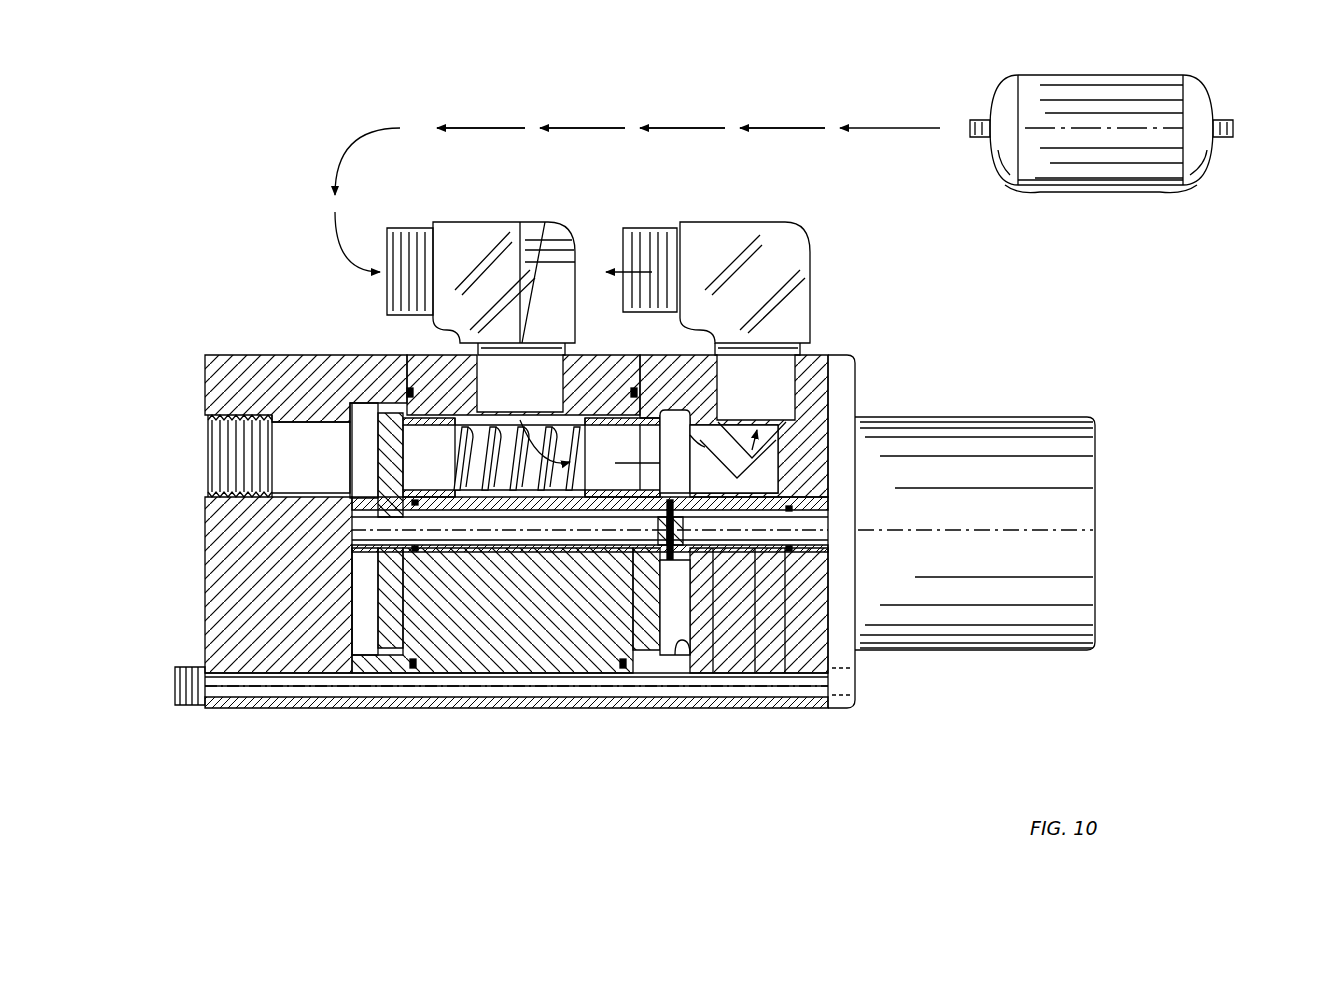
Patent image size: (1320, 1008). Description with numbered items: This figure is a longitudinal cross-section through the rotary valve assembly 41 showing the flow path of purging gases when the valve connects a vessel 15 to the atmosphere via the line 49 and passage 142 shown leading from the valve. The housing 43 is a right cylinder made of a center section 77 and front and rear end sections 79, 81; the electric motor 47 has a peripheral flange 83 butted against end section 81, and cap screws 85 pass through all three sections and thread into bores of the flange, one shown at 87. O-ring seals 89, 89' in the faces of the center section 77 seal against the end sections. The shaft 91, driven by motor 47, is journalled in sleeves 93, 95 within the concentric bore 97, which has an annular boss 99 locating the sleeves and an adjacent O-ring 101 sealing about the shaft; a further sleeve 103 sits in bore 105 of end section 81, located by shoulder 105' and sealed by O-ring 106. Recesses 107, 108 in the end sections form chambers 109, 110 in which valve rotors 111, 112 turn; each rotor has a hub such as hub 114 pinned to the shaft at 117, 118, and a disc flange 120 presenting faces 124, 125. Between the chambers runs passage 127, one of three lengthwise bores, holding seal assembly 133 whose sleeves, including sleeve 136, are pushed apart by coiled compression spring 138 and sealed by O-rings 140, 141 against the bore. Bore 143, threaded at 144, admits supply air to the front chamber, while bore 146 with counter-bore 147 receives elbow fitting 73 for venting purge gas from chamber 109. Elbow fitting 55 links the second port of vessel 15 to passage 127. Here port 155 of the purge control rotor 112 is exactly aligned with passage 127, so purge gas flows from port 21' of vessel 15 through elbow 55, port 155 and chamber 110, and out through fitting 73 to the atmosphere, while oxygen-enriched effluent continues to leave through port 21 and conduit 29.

The vessel 15 is at (1138, 75).
The oxygen effluent port 21 is at (1247, 173).
The purge port 21' is at (965, 183).
The conduit 29 is at (1222, 118).
The rotary valve assembly 41 is at (830, 752).
The housing 43 is at (205, 715).
The electric motor 47 is at (1050, 418).
The fluid line 49 is at (988, 125).
The elbow fitting 55 is at (567, 440).
The elbow fitting 73 is at (815, 268).
The center section 77 is at (462, 555).
The front end section 79 is at (288, 708).
The rear end section 81 is at (733, 706).
The peripheral flange 83 is at (740, 492).
The cap screws 85 is at (375, 690).
The threaded bore 87 is at (845, 708).
The O-ring seal 89 is at (599, 599).
The O-ring seal 89' is at (614, 737).
The shaft 91 is at (518, 555).
The sleeve 93 is at (490, 555).
The sleeve 95 is at (598, 552).
The concentric bore 97 is at (478, 560).
The annular boss 99 is at (552, 550).
The O-ring 101 is at (545, 560).
The sleeve 103 is at (715, 655).
The bore 105 is at (780, 759).
The shoulder 105' is at (906, 518).
The O-ring seal 106 is at (785, 660).
The recess 107 is at (368, 652).
The recess 108 is at (693, 652).
The chamber 109 is at (360, 435).
The chamber 110 is at (709, 437).
The valve rotor 111 is at (345, 655).
The purge control rotor 112 is at (642, 655).
The hub 114 is at (368, 567).
The pin 117 is at (368, 532).
The pin 118 is at (688, 540).
The flange 120 is at (378, 458).
The face 124 is at (418, 443).
The face 125 is at (640, 443).
The passage 127 is at (688, 151).
The seal assembly 133 is at (495, 432).
The sleeve 136 is at (603, 356).
The coiled compression spring 138 is at (583, 490).
The O-ring 140 is at (374, 200).
The O-ring 141 is at (597, 453).
The passage 142 is at (652, 650).
The bore 143 is at (297, 495).
The threads 144 is at (245, 418).
The bore 146 is at (857, 417).
The counter-bore 147 is at (770, 465).
The port 155 is at (682, 464).